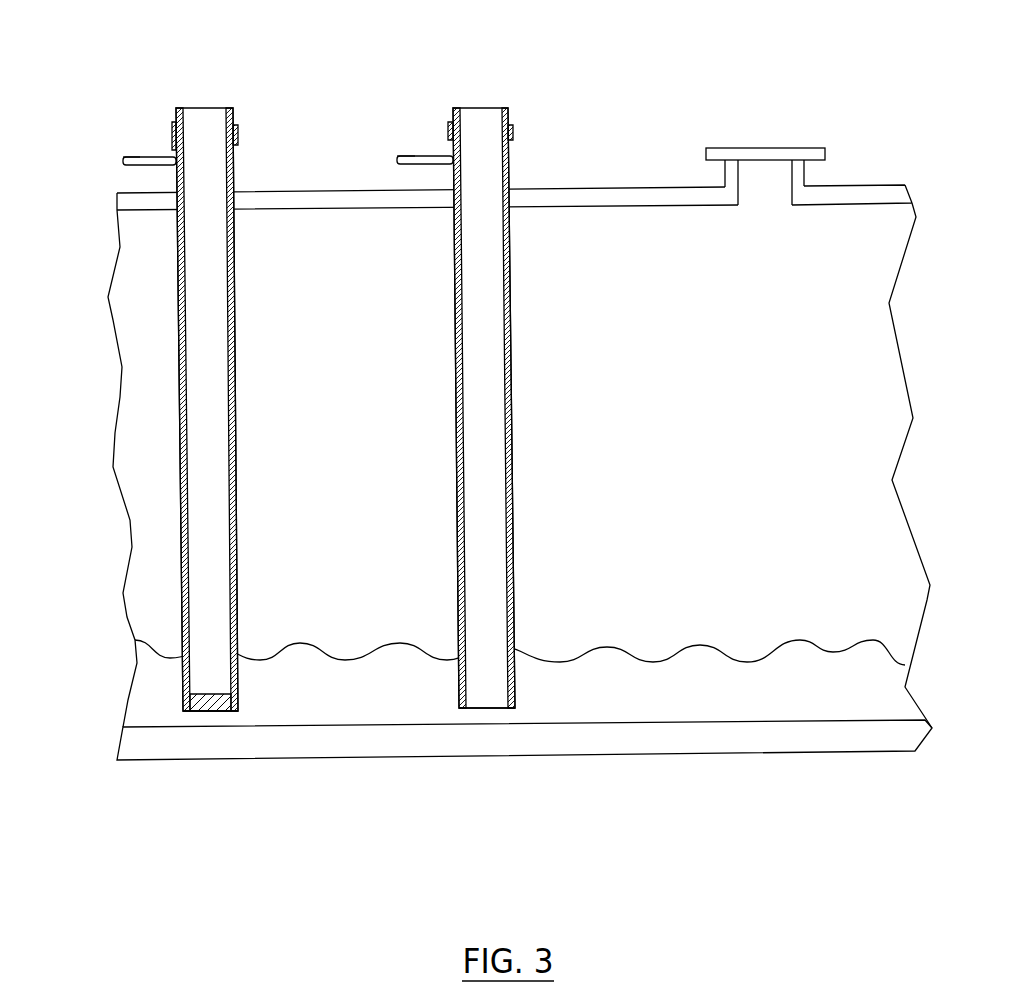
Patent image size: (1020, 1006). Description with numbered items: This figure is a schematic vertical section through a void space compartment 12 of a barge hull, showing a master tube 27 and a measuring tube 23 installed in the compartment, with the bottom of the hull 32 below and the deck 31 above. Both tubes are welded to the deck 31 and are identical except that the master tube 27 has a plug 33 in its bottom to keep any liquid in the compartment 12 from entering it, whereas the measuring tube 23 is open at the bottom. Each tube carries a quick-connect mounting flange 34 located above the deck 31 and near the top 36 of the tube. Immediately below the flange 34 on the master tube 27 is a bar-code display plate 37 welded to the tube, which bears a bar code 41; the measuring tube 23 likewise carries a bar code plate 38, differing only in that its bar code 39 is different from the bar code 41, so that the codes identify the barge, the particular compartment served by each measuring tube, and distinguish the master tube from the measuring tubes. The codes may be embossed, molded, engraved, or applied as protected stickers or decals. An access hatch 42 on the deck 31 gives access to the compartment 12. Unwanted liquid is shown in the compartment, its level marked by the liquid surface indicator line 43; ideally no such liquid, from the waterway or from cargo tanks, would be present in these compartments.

The compartment 12 is at (666, 456).
The measuring tube 23 is at (477, 418).
The master tube 27 is at (208, 390).
The deck 31 is at (592, 188).
The bottom of the hull 32 is at (427, 737).
The plug 33 is at (210, 700).
The quick-connect mounting flange 34 is at (240, 133).
The top of the tube 36 is at (231, 109).
The bar-code display plate 37 is at (123, 162).
The bar code plate 38 is at (397, 162).
The bar code 39 is at (410, 151).
The bar code 41 is at (131, 153).
The access hatch 42 is at (763, 147).
The liquid surface indicator line 43 is at (617, 642).